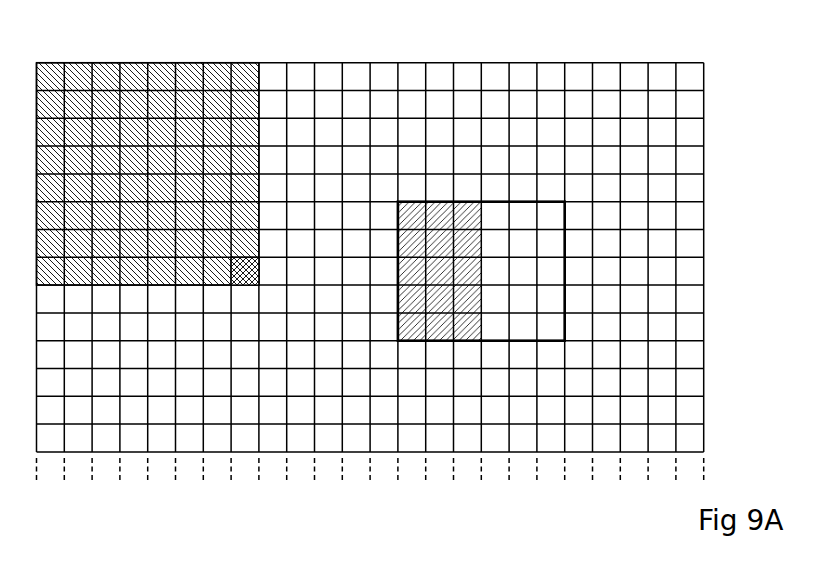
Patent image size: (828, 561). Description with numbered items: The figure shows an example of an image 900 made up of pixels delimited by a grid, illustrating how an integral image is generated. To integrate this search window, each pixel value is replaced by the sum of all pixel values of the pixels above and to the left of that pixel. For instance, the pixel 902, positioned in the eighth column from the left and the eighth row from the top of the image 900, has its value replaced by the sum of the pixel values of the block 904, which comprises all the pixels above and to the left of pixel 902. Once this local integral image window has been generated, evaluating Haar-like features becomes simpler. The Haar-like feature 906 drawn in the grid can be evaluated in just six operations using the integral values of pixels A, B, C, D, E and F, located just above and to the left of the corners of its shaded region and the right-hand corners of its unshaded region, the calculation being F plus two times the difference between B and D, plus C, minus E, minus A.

The image 900 is at (704, 78).
The pixel 902 is at (250, 272).
The block 904 is at (215, 63).
The Haar-like feature 906 is at (502, 201).